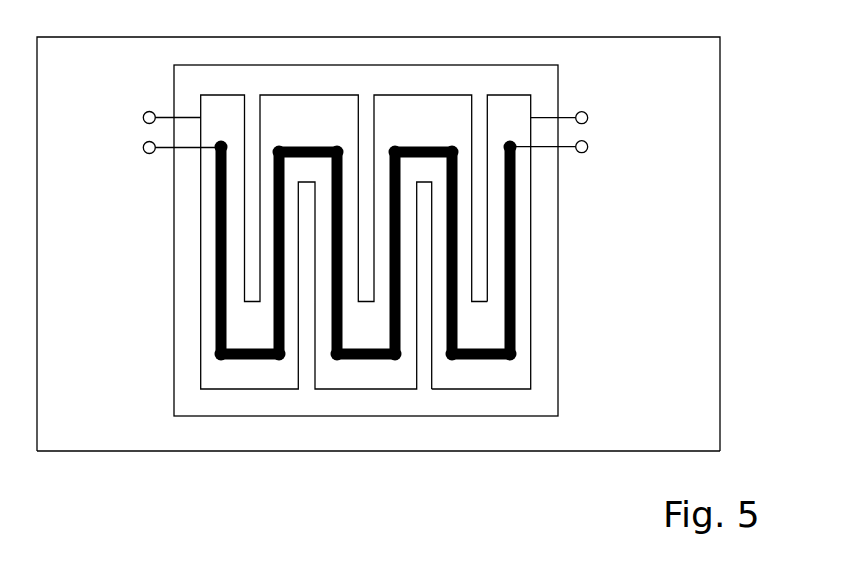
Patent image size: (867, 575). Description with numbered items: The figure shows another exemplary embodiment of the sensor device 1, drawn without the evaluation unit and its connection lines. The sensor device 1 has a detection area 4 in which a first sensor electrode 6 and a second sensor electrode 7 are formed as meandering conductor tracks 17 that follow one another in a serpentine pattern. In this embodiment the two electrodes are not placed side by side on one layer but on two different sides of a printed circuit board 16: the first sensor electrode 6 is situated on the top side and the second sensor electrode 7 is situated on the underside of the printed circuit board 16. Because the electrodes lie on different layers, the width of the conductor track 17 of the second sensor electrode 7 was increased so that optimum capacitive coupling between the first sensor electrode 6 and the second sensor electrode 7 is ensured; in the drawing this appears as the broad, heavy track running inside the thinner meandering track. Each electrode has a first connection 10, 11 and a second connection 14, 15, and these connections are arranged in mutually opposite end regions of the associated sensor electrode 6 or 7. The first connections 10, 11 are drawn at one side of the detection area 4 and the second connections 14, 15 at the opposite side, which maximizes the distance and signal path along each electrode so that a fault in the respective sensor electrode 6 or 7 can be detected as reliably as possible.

The sensor device 1 is at (721, 270).
The detection area 4 is at (565, 383).
The first sensor electrode 6 is at (217, 348).
The second sensor electrode 7 is at (200, 295).
The first connection 10 is at (132, 158).
The first connection 11 is at (140, 105).
The second connection 14 is at (590, 155).
The second connection 15 is at (595, 118).
The printed circuit board 16 is at (438, 452).
The conductor track 17 is at (515, 302).